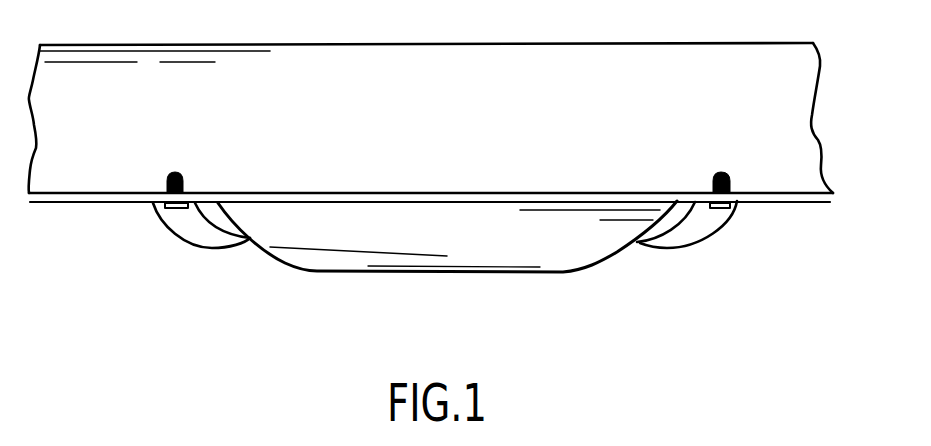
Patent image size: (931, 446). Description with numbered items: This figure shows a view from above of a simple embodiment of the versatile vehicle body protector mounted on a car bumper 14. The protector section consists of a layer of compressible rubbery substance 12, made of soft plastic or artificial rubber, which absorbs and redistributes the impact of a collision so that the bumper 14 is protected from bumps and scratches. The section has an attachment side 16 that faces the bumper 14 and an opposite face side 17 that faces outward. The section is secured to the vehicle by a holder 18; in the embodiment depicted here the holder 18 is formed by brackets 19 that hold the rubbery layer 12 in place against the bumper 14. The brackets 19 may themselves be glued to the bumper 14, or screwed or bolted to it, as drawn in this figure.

The layer of compressible rubbery substance 12 is at (532, 247).
The bumper 14 is at (122, 172).
The attachment side 16 is at (338, 202).
The face side 17 is at (427, 277).
The holder 18 is at (212, 248).
The bracket 19 is at (192, 223).